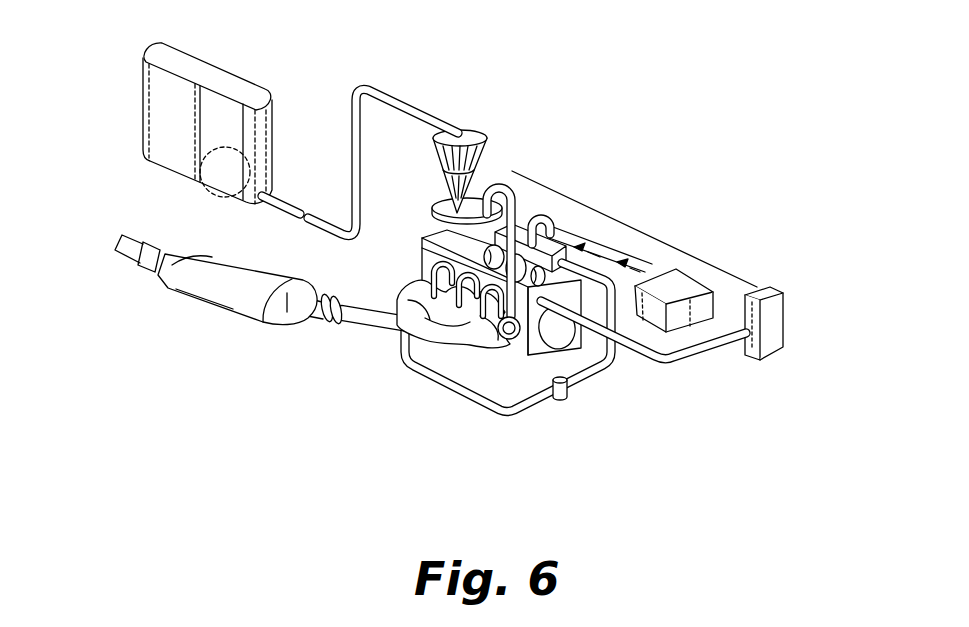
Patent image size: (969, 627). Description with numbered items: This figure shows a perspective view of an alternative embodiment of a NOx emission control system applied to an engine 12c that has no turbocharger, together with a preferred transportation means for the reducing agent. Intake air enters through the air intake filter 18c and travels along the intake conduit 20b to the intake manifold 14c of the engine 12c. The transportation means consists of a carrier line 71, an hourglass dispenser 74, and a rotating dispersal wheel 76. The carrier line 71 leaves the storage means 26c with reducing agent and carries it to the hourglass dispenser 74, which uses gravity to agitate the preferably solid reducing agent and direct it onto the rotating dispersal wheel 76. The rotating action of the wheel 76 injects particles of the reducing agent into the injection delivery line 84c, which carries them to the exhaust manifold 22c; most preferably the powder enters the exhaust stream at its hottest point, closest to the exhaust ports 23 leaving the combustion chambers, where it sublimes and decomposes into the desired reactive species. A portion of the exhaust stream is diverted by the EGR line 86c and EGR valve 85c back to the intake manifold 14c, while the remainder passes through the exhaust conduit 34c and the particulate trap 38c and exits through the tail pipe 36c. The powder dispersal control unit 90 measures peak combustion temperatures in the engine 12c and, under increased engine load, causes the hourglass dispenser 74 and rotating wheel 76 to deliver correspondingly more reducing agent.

The engine 12c is at (422, 257).
The intake manifold 14c is at (616, 250).
The air intake filter 18c is at (686, 280).
The intake conduit 20b is at (618, 246).
The exhaust manifold 22c is at (460, 324).
The exhaust ports 23 is at (428, 295).
The storage means 26c is at (223, 74).
The exhaust conduit 34c is at (358, 318).
The tail pipe 36c is at (128, 260).
The particulate trap 38c is at (237, 288).
The carrier line 71 is at (287, 197).
The hourglass dispenser 74 is at (472, 131).
The rotating dispersal wheel 76 is at (500, 195).
The injection delivery line 84c is at (547, 238).
The EGR valve 85c is at (568, 396).
The EGR line 86c is at (597, 380).
The powder dispersal control unit 90 is at (773, 316).